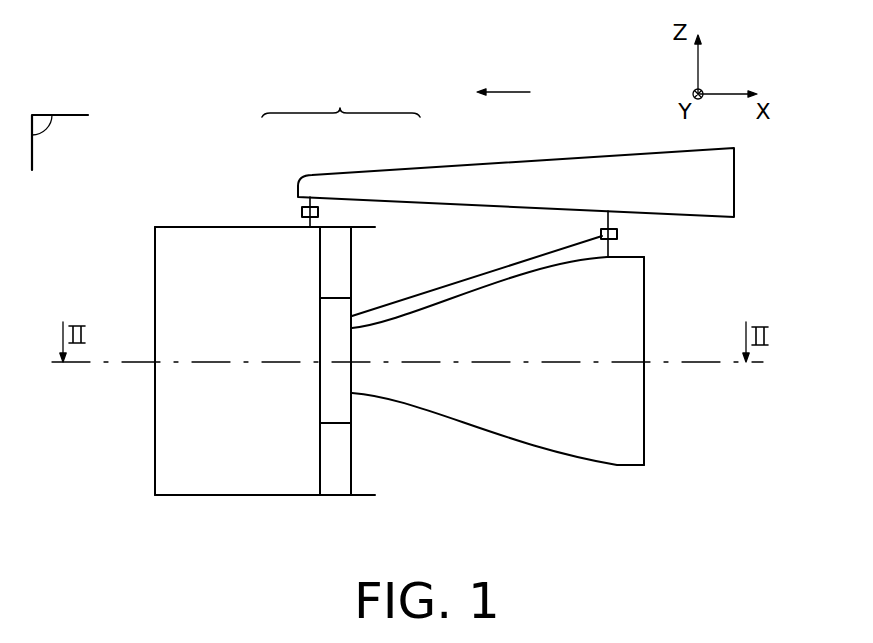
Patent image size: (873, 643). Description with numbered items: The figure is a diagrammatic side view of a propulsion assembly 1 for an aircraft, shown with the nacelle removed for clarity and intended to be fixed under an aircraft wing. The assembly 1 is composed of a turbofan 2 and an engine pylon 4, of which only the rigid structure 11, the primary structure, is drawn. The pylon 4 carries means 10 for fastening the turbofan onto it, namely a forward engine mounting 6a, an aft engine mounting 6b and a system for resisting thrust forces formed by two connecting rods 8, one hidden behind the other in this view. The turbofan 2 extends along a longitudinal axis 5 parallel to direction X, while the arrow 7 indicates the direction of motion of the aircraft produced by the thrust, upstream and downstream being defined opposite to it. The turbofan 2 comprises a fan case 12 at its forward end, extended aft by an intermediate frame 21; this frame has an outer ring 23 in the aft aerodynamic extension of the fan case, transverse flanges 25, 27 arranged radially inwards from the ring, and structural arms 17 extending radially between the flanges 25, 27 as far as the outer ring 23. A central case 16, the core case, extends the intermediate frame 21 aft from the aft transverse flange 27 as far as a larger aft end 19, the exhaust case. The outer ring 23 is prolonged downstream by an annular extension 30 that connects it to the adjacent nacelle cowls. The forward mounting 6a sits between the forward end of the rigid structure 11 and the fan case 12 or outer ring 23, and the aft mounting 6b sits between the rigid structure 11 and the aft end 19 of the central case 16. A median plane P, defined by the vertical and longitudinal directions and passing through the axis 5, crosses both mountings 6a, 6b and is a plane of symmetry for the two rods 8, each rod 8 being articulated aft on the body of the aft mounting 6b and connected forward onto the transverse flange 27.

The propulsion assembly 1 is at (165, 128).
The turbofan 2 is at (130, 297).
The engine pylon 4 is at (546, 132).
The longitudinal axis 5 is at (758, 365).
The forward engine mounting 6a is at (302, 212).
The aft engine mounting 6b is at (603, 228).
The arrow showing direction of motion 7 is at (507, 88).
The thrust force resistance rods 8 is at (450, 280).
The means for fastening the turbofan onto the pylon 10 is at (341, 99).
The rigid structure 11 is at (723, 172).
The fan case 12 is at (179, 226).
The central case 16 is at (498, 428).
The structural arms 17 is at (328, 242).
The aft end of the central case 19 is at (622, 467).
The intermediate frame 21 is at (333, 499).
The outer ring 23 is at (341, 227).
The forward transverse flange 25 is at (318, 328).
The aft transverse flange 27 is at (352, 337).
The annular extension 30 is at (365, 226).
The median plane P is at (42, 118).